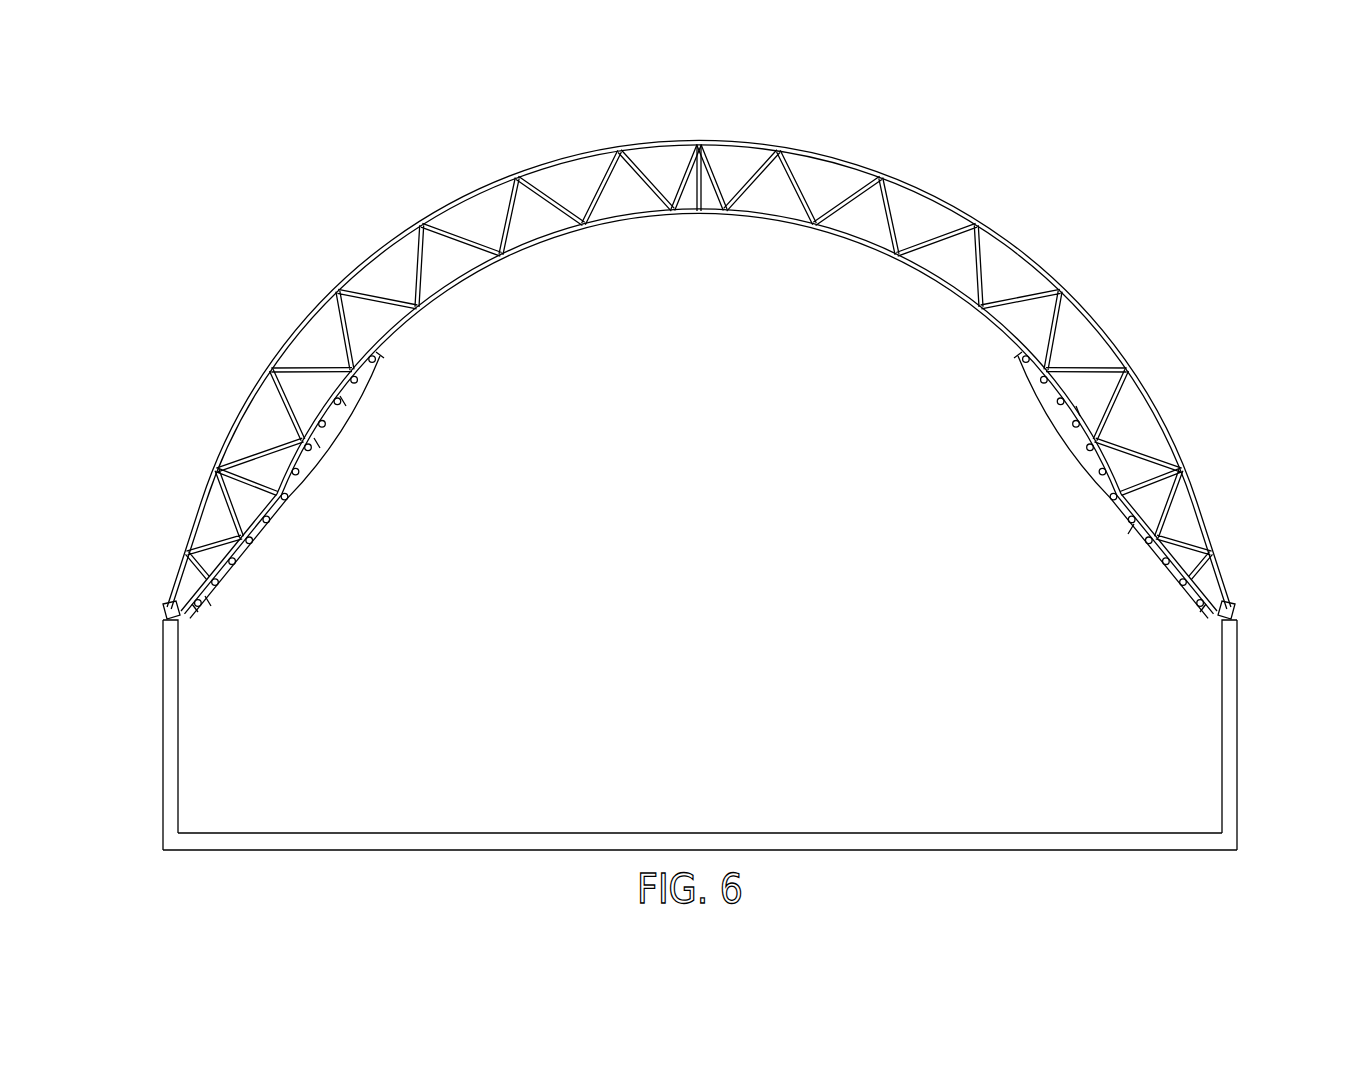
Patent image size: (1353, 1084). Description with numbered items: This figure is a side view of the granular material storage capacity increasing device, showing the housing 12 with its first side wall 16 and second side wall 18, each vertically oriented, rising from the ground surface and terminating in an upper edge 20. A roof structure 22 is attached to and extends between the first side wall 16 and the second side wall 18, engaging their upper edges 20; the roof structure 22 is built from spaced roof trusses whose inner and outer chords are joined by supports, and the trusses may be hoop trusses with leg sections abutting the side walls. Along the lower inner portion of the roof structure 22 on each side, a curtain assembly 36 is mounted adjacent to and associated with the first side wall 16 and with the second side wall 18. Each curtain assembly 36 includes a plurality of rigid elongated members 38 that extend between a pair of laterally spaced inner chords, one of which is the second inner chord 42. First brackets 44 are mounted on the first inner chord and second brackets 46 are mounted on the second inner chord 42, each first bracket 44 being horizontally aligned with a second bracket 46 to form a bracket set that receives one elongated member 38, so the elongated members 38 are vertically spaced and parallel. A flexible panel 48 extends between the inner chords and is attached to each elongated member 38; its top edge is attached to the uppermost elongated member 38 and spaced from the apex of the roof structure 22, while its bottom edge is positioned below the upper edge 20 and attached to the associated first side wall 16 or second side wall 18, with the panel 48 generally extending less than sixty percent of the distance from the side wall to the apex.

The housing 12 is at (699, 386).
The first side wall 16 is at (163, 786).
The second side wall 18 is at (1237, 755).
The upper edge 20 is at (163, 624).
The roof structure 22 is at (690, 232).
The curtain assembly 36 is at (705, 499).
The elongated member 38 is at (377, 359).
The second inner chord 42 is at (1077, 412).
The first bracket 44 is at (342, 402).
The second bracket 46 is at (292, 465).
The flexible panel 48 is at (317, 443).